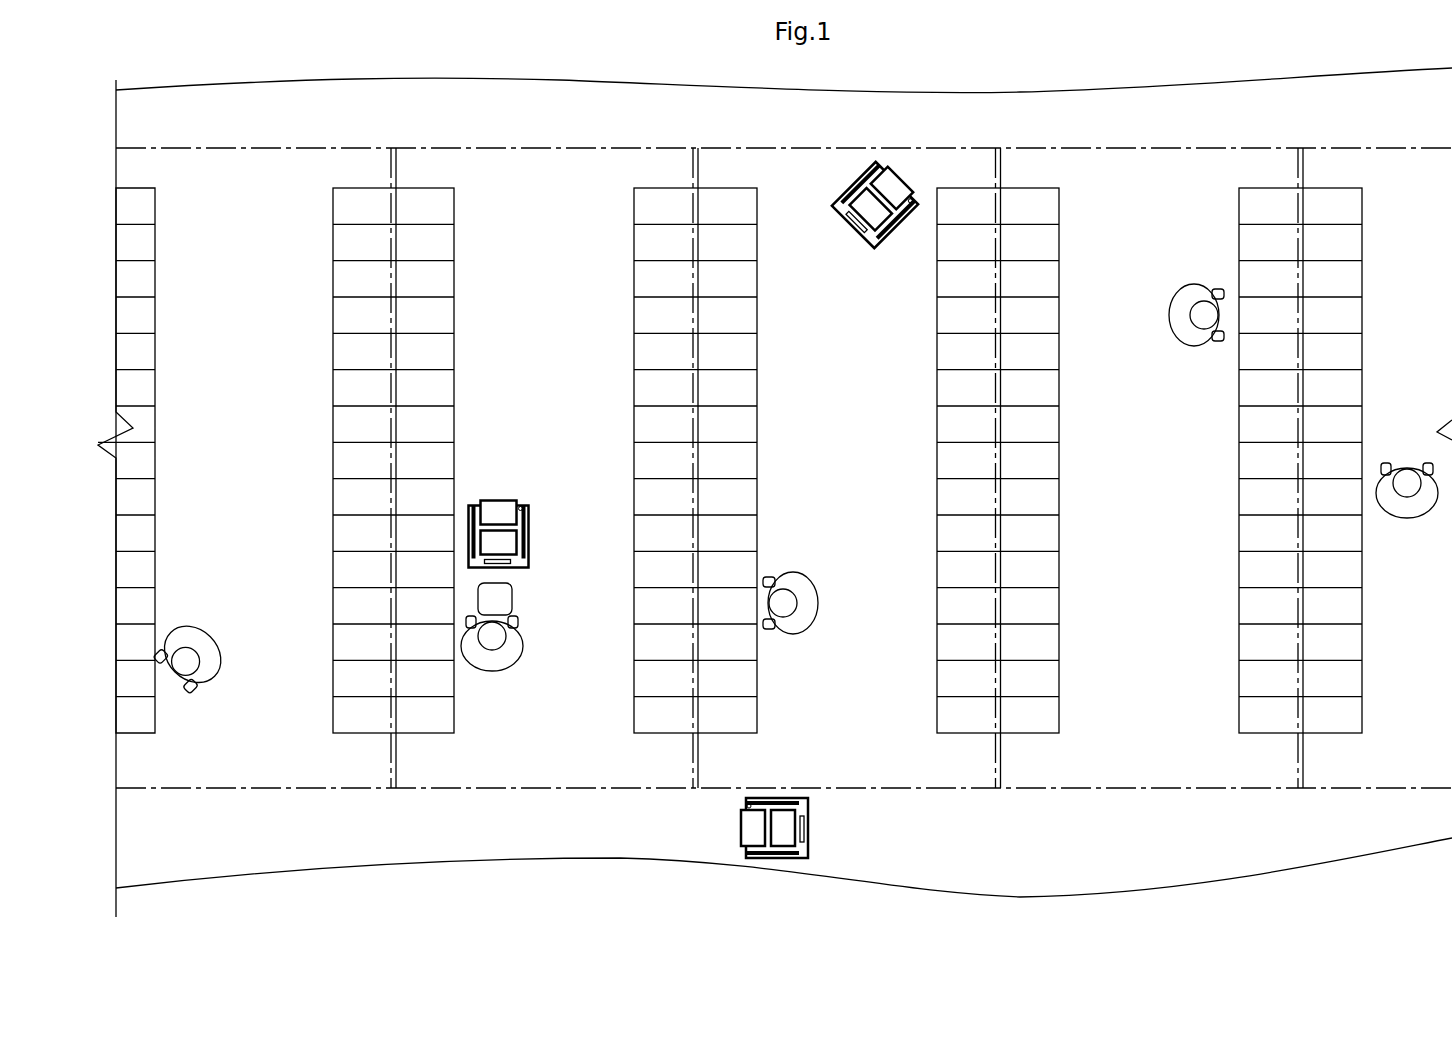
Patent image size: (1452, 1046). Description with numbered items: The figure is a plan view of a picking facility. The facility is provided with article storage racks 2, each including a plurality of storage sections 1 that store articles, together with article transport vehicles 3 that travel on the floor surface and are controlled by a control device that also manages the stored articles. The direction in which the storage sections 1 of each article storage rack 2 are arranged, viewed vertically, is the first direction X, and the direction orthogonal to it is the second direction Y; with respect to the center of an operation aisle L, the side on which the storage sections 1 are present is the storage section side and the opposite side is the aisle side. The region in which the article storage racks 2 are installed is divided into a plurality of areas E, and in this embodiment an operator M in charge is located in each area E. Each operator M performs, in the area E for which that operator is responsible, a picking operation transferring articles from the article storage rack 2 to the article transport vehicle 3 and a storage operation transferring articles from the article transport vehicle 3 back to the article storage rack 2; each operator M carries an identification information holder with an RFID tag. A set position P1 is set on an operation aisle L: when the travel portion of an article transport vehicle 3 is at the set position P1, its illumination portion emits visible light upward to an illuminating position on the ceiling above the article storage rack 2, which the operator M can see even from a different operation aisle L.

The storage section 1 is at (432, 246).
The article storage rack 2 is at (175, 437).
The article transport vehicle 3 is at (897, 232).
The operator M is at (190, 640).
The operation aisle L is at (253, 245).
The area E is at (224, 790).
The set position P1 is at (528, 493).
The first direction X is at (1398, 222).
The second direction Y is at (1430, 123).